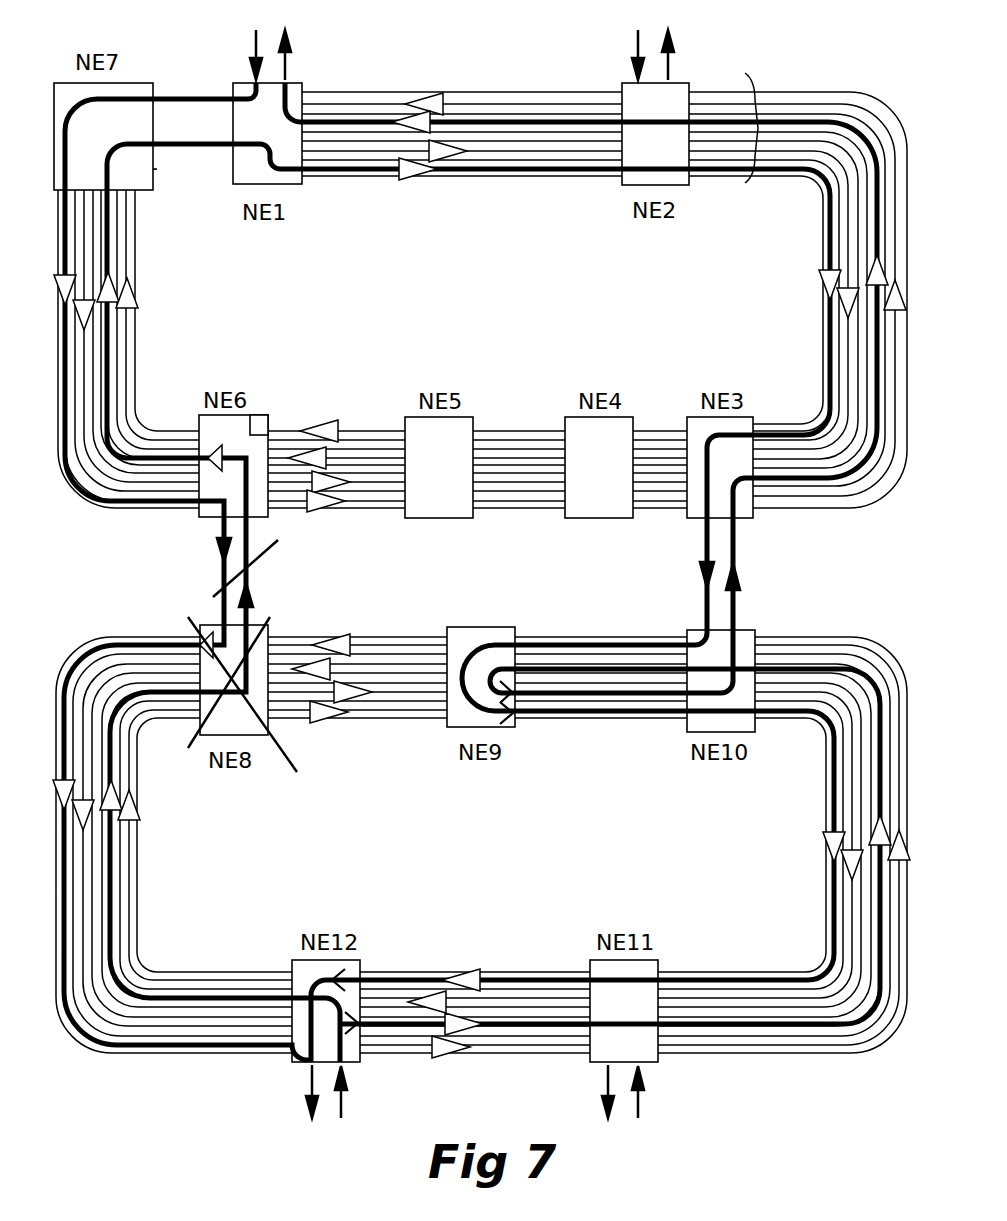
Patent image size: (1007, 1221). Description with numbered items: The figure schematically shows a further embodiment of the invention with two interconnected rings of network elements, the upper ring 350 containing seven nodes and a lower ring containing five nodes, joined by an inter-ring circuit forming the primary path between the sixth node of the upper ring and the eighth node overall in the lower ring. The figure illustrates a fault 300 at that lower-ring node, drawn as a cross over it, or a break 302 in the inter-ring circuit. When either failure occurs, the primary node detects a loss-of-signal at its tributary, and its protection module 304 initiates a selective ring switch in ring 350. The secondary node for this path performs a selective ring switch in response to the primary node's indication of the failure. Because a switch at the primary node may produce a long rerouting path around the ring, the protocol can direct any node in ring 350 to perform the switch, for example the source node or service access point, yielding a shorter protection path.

The ring 350 is at (758, 128).
The protection module 304 is at (264, 414).
The break 302 is at (205, 588).
The fault 300 is at (286, 748).